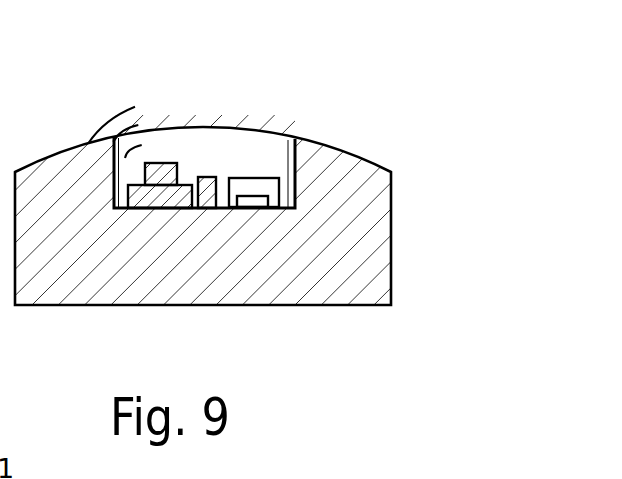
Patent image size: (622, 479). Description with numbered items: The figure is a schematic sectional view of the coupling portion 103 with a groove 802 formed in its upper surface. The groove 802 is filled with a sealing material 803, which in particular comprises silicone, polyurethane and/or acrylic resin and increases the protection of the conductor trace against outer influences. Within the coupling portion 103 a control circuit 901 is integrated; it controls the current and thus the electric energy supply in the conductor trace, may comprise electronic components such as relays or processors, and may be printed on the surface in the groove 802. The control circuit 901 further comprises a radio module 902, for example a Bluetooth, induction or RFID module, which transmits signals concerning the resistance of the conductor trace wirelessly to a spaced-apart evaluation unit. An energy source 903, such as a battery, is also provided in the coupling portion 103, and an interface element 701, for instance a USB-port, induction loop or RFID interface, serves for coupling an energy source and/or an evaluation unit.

The coupling portion 103 is at (383, 248).
The interface element 701 is at (242, 186).
The groove 802 is at (296, 157).
The sealing material 803 is at (273, 160).
The control circuit 901 is at (165, 190).
The radio module 902 is at (163, 166).
The energy source 903 is at (205, 180).